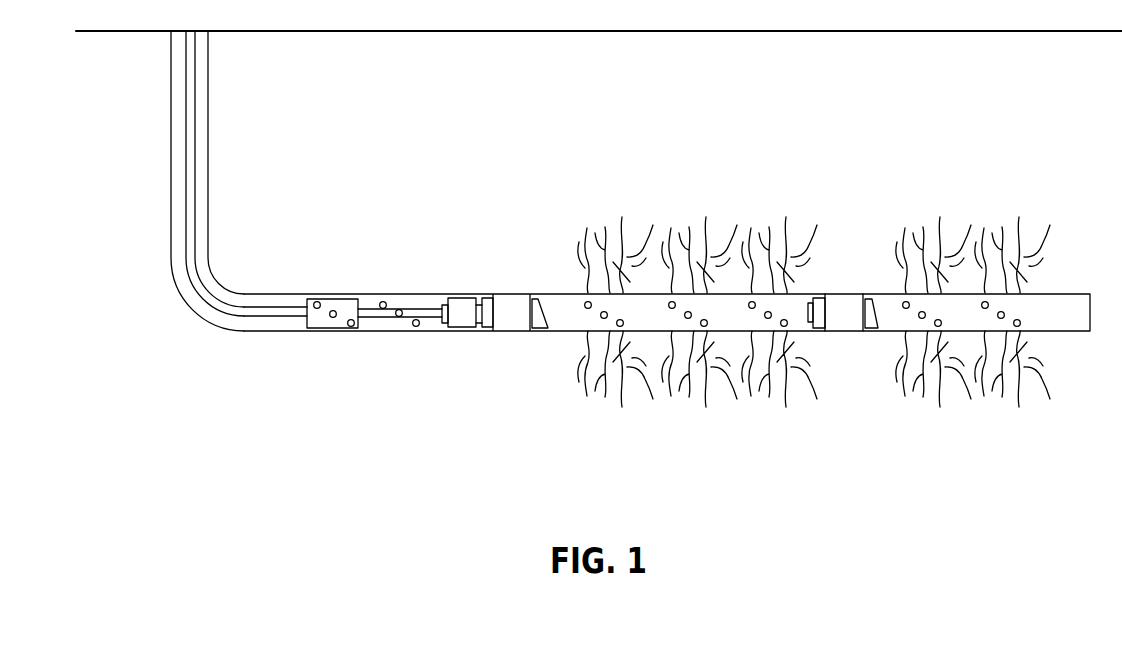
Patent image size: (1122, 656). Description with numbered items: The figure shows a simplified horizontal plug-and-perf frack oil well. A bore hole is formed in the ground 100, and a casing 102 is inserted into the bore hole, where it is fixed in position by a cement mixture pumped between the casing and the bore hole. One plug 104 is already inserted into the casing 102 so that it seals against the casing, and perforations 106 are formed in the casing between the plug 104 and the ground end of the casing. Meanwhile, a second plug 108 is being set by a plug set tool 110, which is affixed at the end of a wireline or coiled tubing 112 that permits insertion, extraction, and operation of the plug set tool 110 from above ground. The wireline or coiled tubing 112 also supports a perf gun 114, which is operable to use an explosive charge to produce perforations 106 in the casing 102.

The ground 100 is at (828, 101).
The casing 102 is at (209, 103).
The plug 104 is at (840, 331).
The perforations 106 is at (588, 295).
The second plug 108 is at (503, 332).
The plug set tool 110 is at (452, 323).
The wireline or coiled tubing 112 is at (237, 312).
The perf gun 114 is at (323, 322).